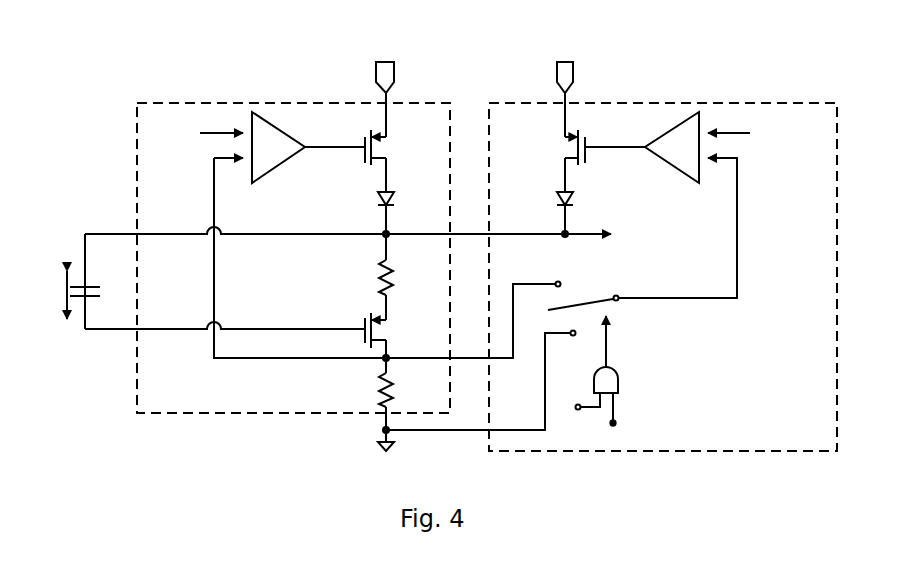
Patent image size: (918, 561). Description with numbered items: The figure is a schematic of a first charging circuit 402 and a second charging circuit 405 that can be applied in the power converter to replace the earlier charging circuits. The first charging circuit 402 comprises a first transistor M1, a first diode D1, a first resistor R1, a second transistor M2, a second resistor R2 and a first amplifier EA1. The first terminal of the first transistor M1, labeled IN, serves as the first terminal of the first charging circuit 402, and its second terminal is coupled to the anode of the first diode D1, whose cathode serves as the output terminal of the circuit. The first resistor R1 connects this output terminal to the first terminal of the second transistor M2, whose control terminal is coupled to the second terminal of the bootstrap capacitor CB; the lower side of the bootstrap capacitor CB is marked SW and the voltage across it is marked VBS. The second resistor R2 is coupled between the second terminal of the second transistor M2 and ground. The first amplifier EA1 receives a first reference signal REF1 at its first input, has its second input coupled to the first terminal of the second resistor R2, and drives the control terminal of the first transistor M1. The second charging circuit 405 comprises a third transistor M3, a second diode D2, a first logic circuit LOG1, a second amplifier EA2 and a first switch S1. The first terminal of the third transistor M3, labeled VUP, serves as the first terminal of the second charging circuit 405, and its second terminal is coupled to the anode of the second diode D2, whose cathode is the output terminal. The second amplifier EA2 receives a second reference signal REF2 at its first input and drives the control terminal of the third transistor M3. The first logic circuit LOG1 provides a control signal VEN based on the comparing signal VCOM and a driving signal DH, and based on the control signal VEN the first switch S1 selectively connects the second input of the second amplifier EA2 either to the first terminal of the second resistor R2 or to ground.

The first charging circuit 402 is at (252, 413).
The second charging circuit 405 is at (738, 455).
The input terminal IN is at (385, 68).
The supply voltage terminal VUP is at (561, 68).
The first amplifier EA1 is at (275, 163).
The second amplifier EA2 is at (660, 160).
The first reference signal REF1 is at (197, 142).
The second reference signal REF2 is at (750, 133).
The first transistor M1 is at (387, 150).
The second transistor M2 is at (389, 322).
The third transistor M3 is at (563, 145).
The first diode D1 is at (394, 198).
The second diode D2 is at (556, 199).
The first resistor R1 is at (393, 270).
The second resistor R2 is at (393, 383).
The first switch S1 is at (583, 291).
The control signal VEN is at (607, 330).
The first logic circuit LOG1 is at (618, 378).
The high-side drive signal DH is at (574, 419).
The comparing signal VCOM is at (619, 433).
The bootstrap capacitor CB is at (96, 281).
The bootstrap voltage VBS is at (47, 295).
The switch node SW is at (67, 348).